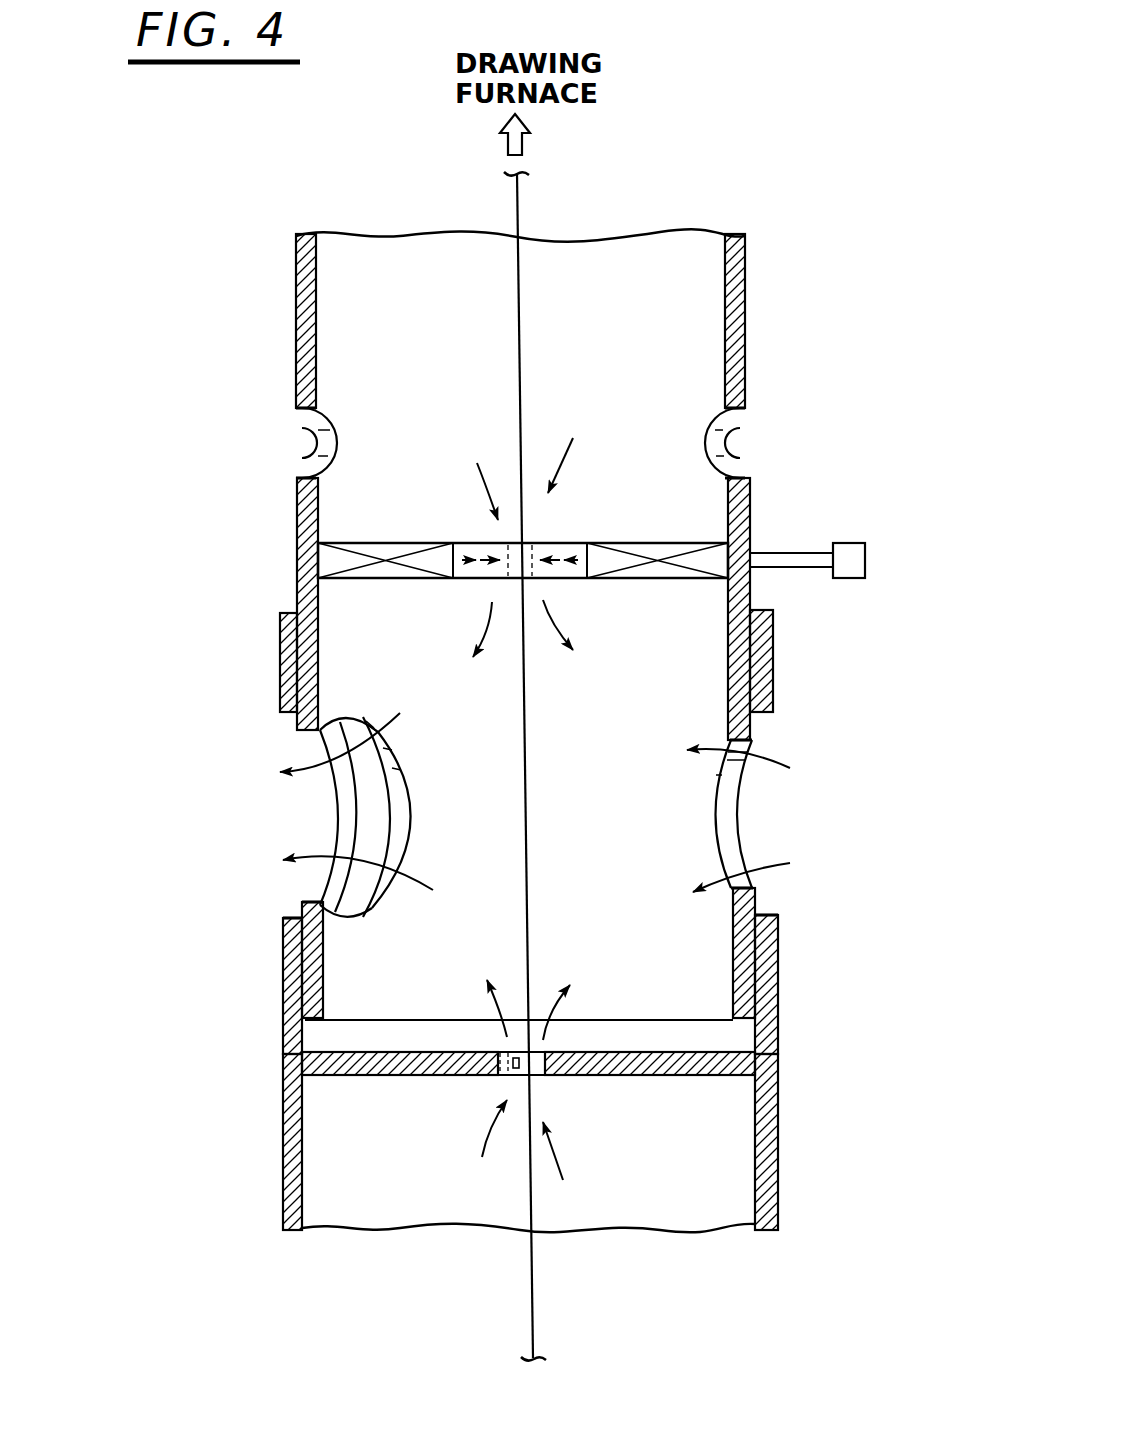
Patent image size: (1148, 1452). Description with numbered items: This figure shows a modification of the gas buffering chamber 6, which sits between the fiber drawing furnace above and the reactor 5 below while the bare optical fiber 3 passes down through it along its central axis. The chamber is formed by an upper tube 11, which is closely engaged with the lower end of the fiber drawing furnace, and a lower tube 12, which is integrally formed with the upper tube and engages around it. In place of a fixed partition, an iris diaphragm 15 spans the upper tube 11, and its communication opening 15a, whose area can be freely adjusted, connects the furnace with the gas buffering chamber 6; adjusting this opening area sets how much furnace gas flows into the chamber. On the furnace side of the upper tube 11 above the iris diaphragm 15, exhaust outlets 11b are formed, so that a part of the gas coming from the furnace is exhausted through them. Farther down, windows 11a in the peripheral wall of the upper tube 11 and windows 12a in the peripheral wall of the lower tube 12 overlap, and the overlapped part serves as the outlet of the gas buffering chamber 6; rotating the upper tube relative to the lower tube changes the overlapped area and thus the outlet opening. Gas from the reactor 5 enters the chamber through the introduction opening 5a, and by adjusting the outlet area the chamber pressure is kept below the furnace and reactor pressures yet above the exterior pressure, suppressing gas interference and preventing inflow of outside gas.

The bare optical fiber 3 is at (520, 293).
The reactor 5 is at (290, 1170).
The introduction opening 5a is at (548, 1078).
The gas buffering chamber 6 is at (590, 831).
The upper tube 11 is at (745, 302).
The windows of the upper tube 11a is at (395, 772).
The exhaust outlets 11b is at (320, 445).
The lower tube 12 is at (292, 1000).
The windows of the lower tube 12a is at (343, 825).
The iris diaphragm 15 is at (652, 548).
The communication opening 15a is at (527, 543).